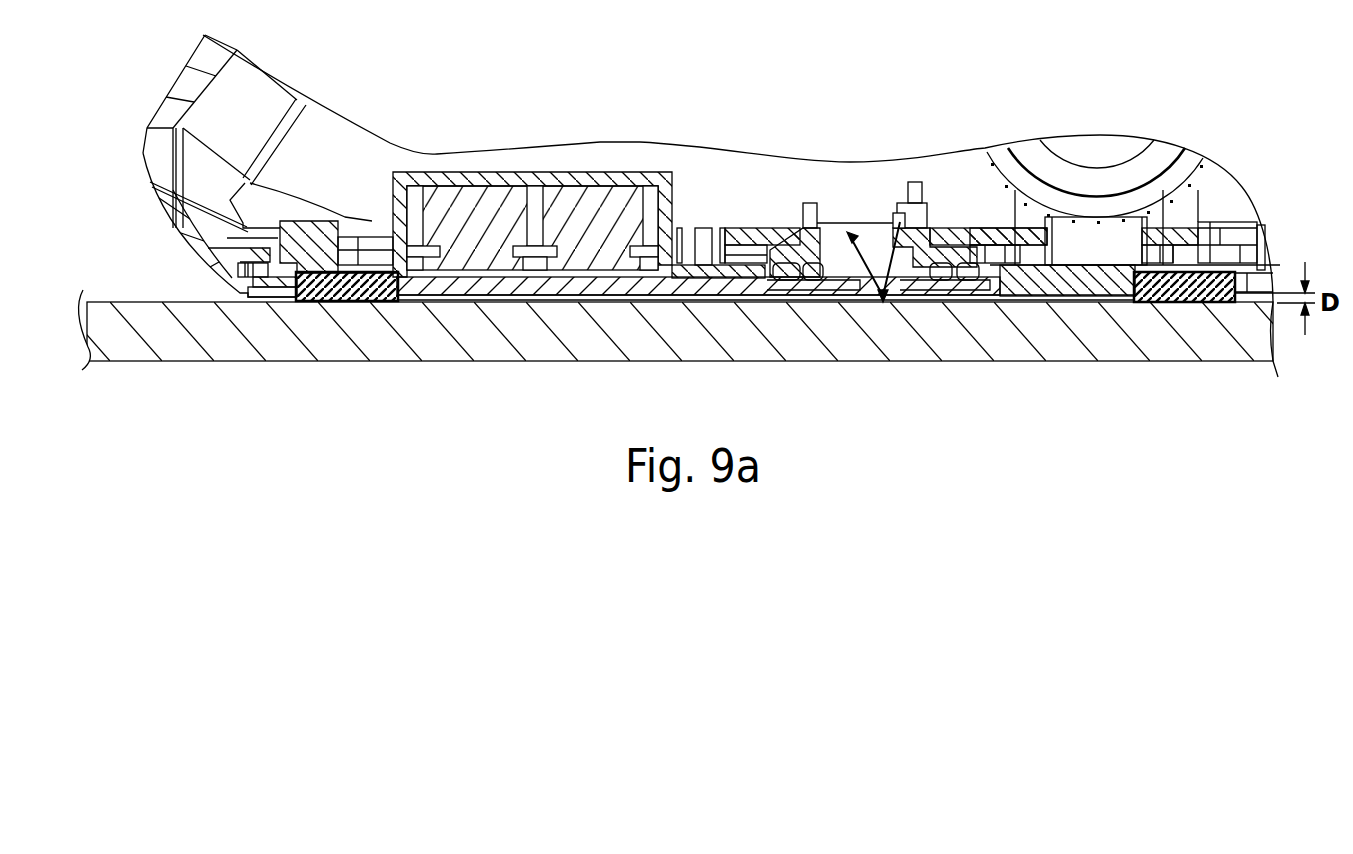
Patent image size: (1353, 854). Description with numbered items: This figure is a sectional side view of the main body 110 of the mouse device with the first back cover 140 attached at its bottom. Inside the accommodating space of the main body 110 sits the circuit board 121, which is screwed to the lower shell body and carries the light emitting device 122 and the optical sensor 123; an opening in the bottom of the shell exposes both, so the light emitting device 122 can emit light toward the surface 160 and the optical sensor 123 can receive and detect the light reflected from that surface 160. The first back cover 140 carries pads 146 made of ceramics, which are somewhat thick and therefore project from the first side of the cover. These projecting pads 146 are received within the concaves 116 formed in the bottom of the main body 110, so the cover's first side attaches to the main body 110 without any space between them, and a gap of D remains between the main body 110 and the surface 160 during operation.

The main body 110 is at (165, 92).
The concaves 116 is at (358, 265).
The circuit board 121 is at (1013, 210).
The light emitting device 122 is at (900, 248).
The optical sensor 123 is at (825, 247).
The first back cover 140 is at (217, 291).
The pads 146 is at (349, 303).
The surface 160 is at (108, 302).